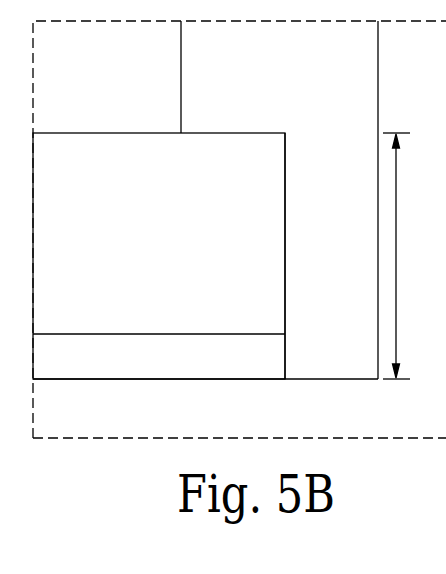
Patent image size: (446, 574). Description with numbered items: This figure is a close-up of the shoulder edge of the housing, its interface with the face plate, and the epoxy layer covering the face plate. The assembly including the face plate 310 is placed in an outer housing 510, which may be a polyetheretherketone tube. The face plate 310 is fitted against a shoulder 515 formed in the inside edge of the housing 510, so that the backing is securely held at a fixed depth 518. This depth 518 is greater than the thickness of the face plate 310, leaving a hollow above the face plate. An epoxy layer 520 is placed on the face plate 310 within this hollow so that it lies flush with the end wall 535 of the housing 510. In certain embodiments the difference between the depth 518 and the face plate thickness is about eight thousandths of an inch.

The face plate 310 is at (92, 133).
The outer housing 510 is at (193, 52).
The shoulder 515 is at (264, 133).
The fixed depth 518 is at (397, 258).
The epoxy layer 520 is at (171, 365).
The end wall 535 is at (334, 380).